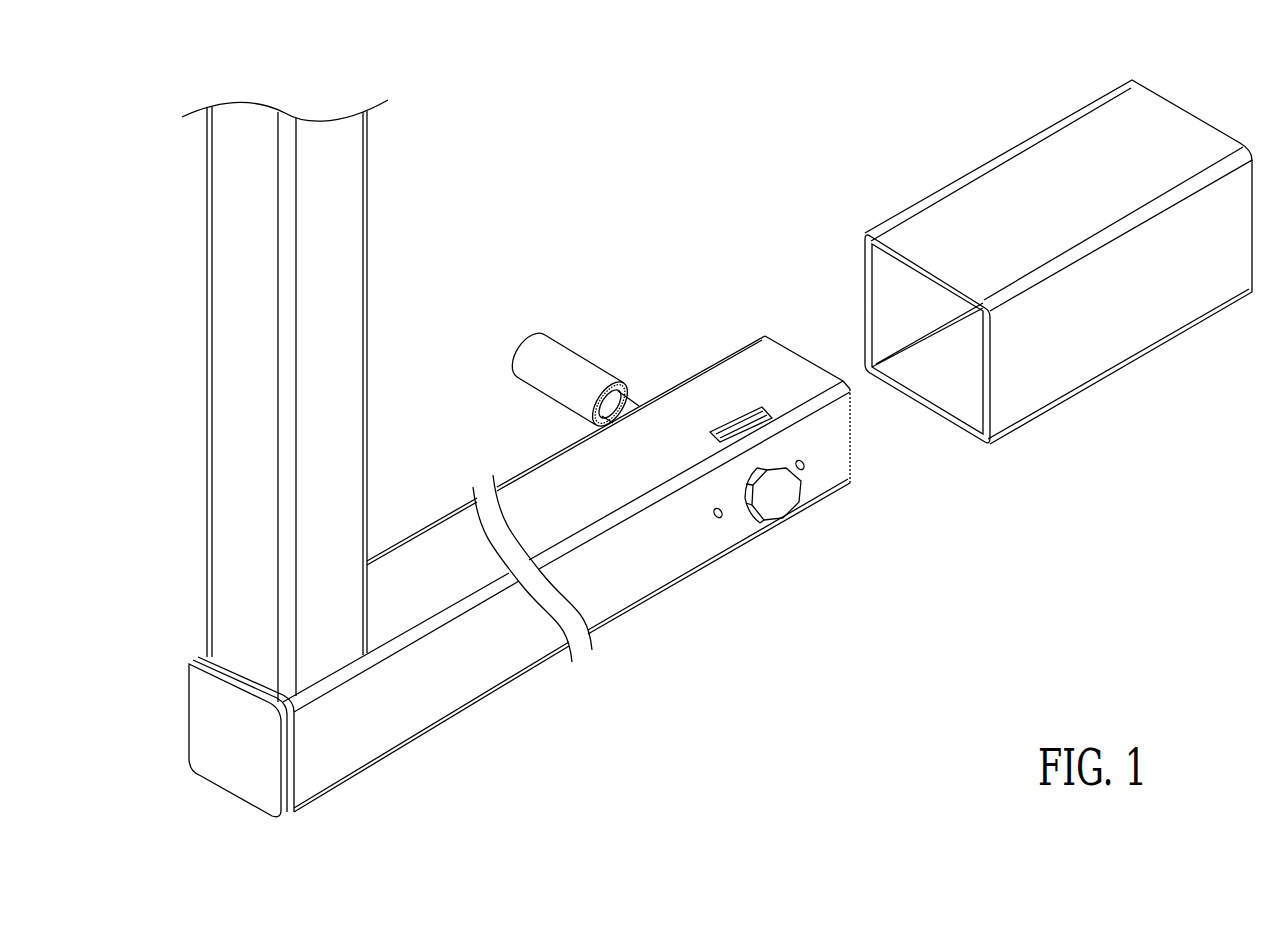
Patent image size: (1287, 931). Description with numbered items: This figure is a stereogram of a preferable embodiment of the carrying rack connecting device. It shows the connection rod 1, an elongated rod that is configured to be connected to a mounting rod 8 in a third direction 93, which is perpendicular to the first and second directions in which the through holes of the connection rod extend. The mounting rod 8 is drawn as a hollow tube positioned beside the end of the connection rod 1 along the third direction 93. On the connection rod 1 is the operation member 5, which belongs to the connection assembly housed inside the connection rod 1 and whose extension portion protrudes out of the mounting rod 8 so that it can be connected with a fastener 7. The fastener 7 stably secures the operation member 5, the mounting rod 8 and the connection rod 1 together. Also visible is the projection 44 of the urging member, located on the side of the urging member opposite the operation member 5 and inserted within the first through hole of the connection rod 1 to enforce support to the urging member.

The connection rod 1 is at (726, 370).
The operation member 5 is at (785, 502).
The fastener 7 is at (573, 347).
The mounting rod 8 is at (1107, 350).
The projection 44 is at (773, 420).
The third direction 93 is at (853, 383).